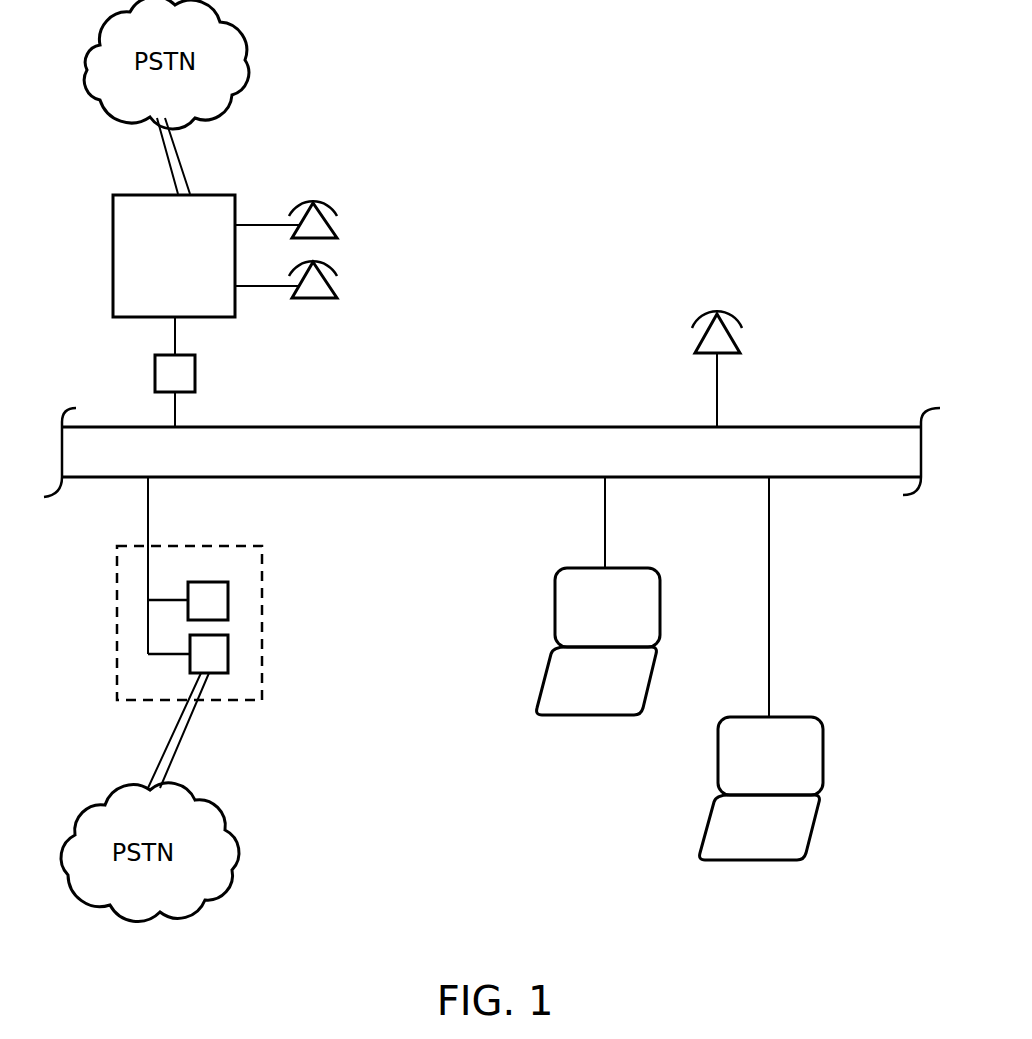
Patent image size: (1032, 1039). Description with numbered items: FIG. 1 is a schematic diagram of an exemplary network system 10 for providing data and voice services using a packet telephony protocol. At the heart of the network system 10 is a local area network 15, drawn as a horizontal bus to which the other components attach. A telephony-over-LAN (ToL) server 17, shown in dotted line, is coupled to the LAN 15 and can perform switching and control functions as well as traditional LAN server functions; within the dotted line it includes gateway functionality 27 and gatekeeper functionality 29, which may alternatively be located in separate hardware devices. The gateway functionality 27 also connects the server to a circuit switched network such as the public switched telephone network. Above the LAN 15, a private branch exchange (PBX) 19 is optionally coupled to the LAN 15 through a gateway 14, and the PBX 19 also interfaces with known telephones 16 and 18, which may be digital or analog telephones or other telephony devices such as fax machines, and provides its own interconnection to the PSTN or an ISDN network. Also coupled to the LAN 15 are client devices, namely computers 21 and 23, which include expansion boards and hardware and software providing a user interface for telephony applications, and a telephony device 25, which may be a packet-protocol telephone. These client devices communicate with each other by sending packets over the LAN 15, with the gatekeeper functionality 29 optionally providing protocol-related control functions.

The network system 10 is at (663, 60).
The H.323 gateway 14 is at (195, 372).
The local area network 15 is at (527, 427).
The telephone 16 is at (333, 232).
The telephony-over-LAN server 17 is at (217, 546).
The telephone 18 is at (335, 290).
The private branch exchange 19 is at (113, 233).
The computer 21 is at (555, 605).
The computer 23 is at (823, 760).
The telephony device 25 is at (740, 345).
The H.323 gateway functionality 27 is at (228, 650).
The H.323 gatekeeper functionality 29 is at (228, 600).